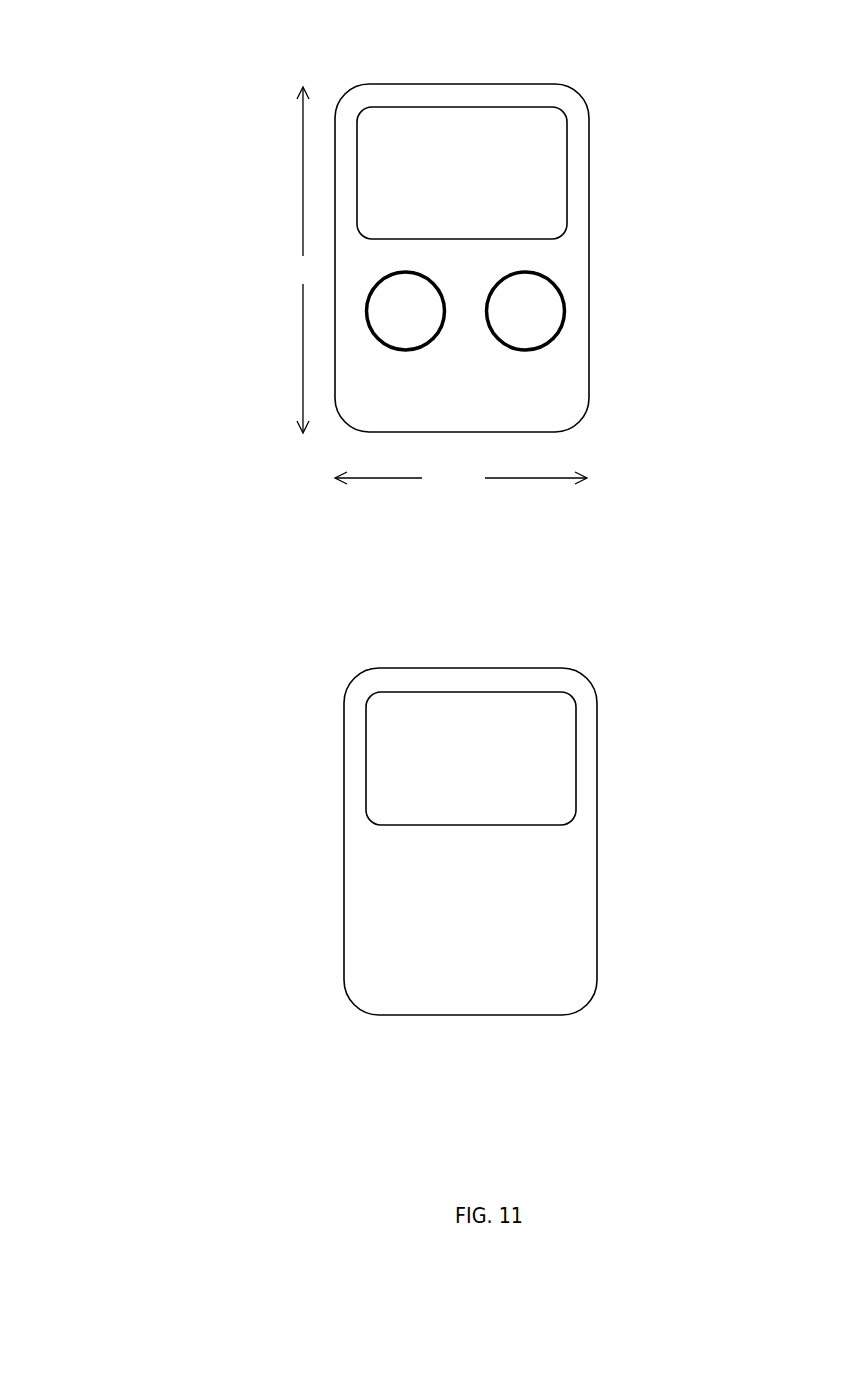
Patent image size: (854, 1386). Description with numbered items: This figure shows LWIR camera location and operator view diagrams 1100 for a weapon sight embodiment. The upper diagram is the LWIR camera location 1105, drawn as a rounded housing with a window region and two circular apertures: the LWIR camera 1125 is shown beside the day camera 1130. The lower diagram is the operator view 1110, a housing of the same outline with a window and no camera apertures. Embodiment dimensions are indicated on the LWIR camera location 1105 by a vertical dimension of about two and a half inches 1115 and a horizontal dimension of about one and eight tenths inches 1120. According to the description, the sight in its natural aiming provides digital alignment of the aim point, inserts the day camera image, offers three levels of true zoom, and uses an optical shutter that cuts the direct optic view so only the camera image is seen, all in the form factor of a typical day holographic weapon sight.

The LWIR camera location and operator view diagrams 1100 is at (64, 36).
The LWIR camera location 1105 is at (533, 258).
The operator view 1110 is at (537, 841).
The dimension of about 2.5 inches 1115 is at (303, 260).
The dimension of about 1.8 inches 1120 is at (461, 477).
The LWIR camera 1125 is at (406, 311).
The day camera 1130 is at (526, 311).